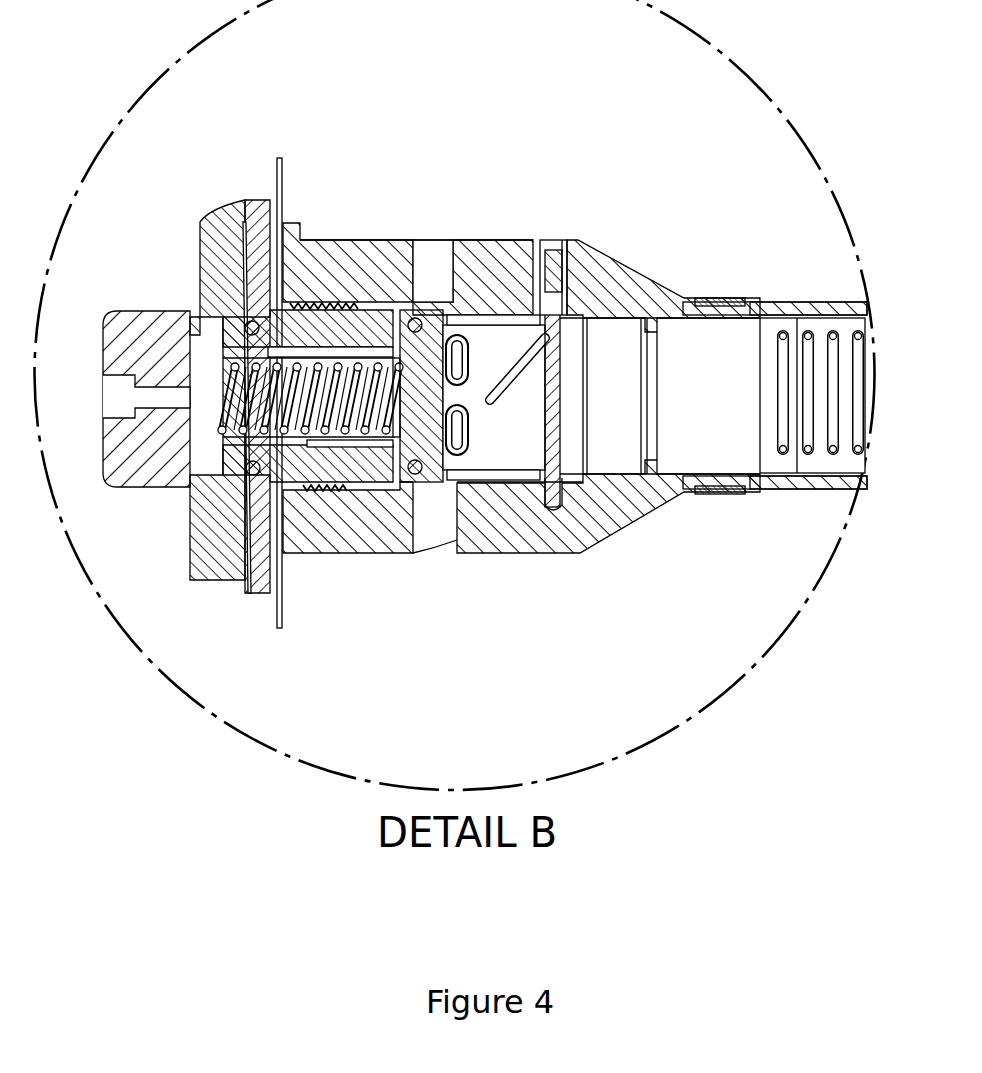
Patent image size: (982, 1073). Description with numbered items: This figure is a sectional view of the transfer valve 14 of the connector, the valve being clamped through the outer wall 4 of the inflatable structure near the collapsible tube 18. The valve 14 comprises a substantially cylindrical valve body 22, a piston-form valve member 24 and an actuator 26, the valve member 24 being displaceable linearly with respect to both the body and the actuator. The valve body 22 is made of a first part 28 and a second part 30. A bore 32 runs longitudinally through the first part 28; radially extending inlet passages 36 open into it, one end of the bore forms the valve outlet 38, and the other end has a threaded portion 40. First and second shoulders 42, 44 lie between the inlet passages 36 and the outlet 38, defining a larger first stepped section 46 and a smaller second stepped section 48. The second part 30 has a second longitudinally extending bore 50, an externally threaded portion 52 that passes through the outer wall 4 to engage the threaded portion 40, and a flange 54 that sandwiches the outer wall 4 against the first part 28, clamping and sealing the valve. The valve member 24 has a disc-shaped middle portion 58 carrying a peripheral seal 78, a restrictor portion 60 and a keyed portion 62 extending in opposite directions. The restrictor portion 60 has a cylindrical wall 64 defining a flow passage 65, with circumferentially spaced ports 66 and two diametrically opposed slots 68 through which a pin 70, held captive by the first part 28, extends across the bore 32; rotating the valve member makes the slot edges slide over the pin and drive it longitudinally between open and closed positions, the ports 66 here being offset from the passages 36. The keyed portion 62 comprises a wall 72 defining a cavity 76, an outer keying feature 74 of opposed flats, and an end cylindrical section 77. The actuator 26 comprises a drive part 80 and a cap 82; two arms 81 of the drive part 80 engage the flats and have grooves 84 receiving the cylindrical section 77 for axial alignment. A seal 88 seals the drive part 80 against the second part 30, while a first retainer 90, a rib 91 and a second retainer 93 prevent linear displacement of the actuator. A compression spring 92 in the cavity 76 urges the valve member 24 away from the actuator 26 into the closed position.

The outer wall 4 is at (281, 628).
The valve 14 is at (686, 131).
The collapsible tube 18 is at (820, 308).
The valve body 22 is at (636, 268).
The valve member 24 is at (508, 480).
The actuator 26 is at (165, 457).
The first part 28 is at (620, 515).
The second part 30 is at (243, 318).
The bore 32 is at (600, 312).
The inlet passages 36 is at (443, 246).
The valve outlet 38 is at (744, 383).
The threaded portion 40 is at (411, 353).
The first shoulder 42 is at (437, 475).
The second shoulder 44 is at (643, 310).
The first stepped section 46 is at (510, 315).
The second stepped section 48 is at (738, 455).
The second longitudinally extending bore 50 is at (333, 447).
The externally threaded portion 52 is at (347, 302).
The flange 54 is at (240, 593).
The middle portion 58 is at (420, 244).
The restrictor portion 60 is at (495, 316).
The keyed portion 62 is at (313, 346).
The cylindrical wall 64 is at (548, 545).
The flow passage 65 is at (494, 440).
The ports 66 is at (498, 478).
The slots 68 is at (520, 373).
The pin 70 is at (556, 430).
The wall 72 is at (363, 482).
The keying feature 74 is at (248, 300).
The cavity 76 is at (217, 490).
The cylindrical section 77 is at (245, 312).
The seal 78 is at (415, 474).
The drive part 80 is at (297, 343).
The arms 81 is at (240, 478).
The cap 82 is at (133, 333).
The grooves 84 is at (238, 318).
The seal 88 is at (245, 325).
The first retainer 90 is at (413, 318).
The rib 91 is at (332, 302).
The compression spring 92 is at (198, 428).
The second retainer 93 is at (395, 485).